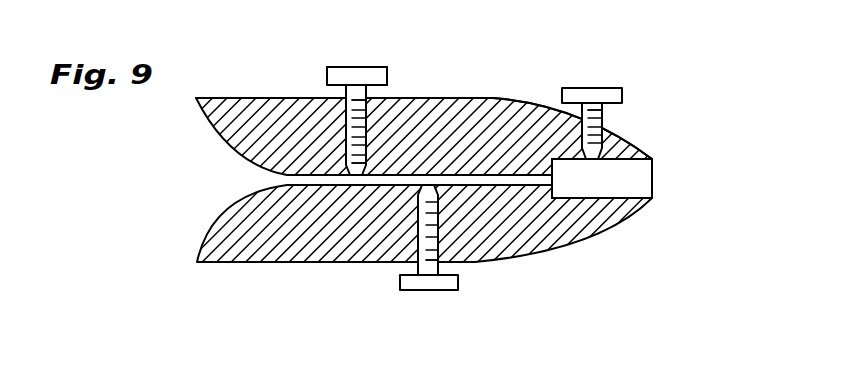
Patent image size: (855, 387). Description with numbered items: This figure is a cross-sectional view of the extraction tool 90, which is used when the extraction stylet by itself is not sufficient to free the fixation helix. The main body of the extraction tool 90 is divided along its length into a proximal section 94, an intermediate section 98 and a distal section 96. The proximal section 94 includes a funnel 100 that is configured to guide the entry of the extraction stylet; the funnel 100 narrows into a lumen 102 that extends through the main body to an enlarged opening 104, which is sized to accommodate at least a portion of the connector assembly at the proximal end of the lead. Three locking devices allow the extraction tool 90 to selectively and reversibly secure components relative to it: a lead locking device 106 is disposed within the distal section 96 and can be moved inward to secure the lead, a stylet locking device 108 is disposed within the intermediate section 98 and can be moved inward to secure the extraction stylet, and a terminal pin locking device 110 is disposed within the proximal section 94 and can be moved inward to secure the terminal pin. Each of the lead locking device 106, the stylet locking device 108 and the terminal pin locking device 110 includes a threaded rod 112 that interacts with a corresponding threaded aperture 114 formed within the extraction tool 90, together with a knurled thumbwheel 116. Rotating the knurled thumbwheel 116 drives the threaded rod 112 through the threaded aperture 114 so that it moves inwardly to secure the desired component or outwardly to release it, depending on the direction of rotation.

The extraction tool 90 is at (541, 280).
The proximal section 94 is at (233, 107).
The distal section 96 is at (627, 142).
The intermediate section 98 is at (422, 137).
The funnel 100 is at (210, 225).
The lumen 102 is at (322, 180).
The enlarged opening 104 is at (622, 183).
The lead locking device 106 is at (573, 87).
The stylet locking device 108 is at (342, 67).
The terminal pin locking device 110 is at (416, 292).
The threaded rod 112 is at (357, 118).
The threaded aperture 114 is at (345, 120).
The knurled thumbwheel 116 is at (378, 78).